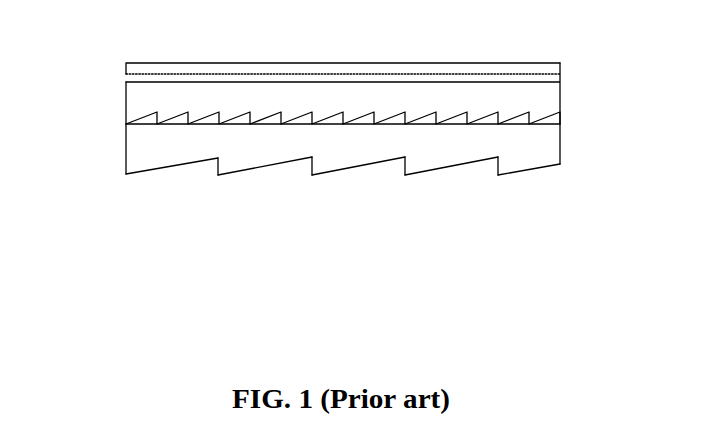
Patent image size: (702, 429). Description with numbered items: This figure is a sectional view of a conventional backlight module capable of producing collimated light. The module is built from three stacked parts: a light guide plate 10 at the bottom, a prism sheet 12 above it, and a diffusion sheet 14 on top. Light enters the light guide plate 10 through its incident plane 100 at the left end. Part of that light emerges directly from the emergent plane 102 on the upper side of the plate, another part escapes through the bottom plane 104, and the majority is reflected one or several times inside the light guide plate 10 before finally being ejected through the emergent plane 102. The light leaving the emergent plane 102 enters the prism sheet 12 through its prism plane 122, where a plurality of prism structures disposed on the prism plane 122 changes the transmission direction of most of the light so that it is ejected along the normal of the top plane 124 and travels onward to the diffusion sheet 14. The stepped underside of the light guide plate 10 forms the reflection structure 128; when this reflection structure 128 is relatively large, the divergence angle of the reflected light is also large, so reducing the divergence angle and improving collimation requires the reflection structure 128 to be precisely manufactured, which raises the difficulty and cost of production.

The light guide plate 10 is at (118, 172).
The prism sheet 12 is at (118, 93).
The diffusion sheet 14 is at (547, 66).
The incident plane 100 is at (126, 141).
The emergent plane 102 is at (560, 122).
The bottom plane 104 is at (270, 168).
The prism plane 122 is at (139, 118).
The top plane 124 is at (560, 81).
The reflection structure 128 is at (217, 166).